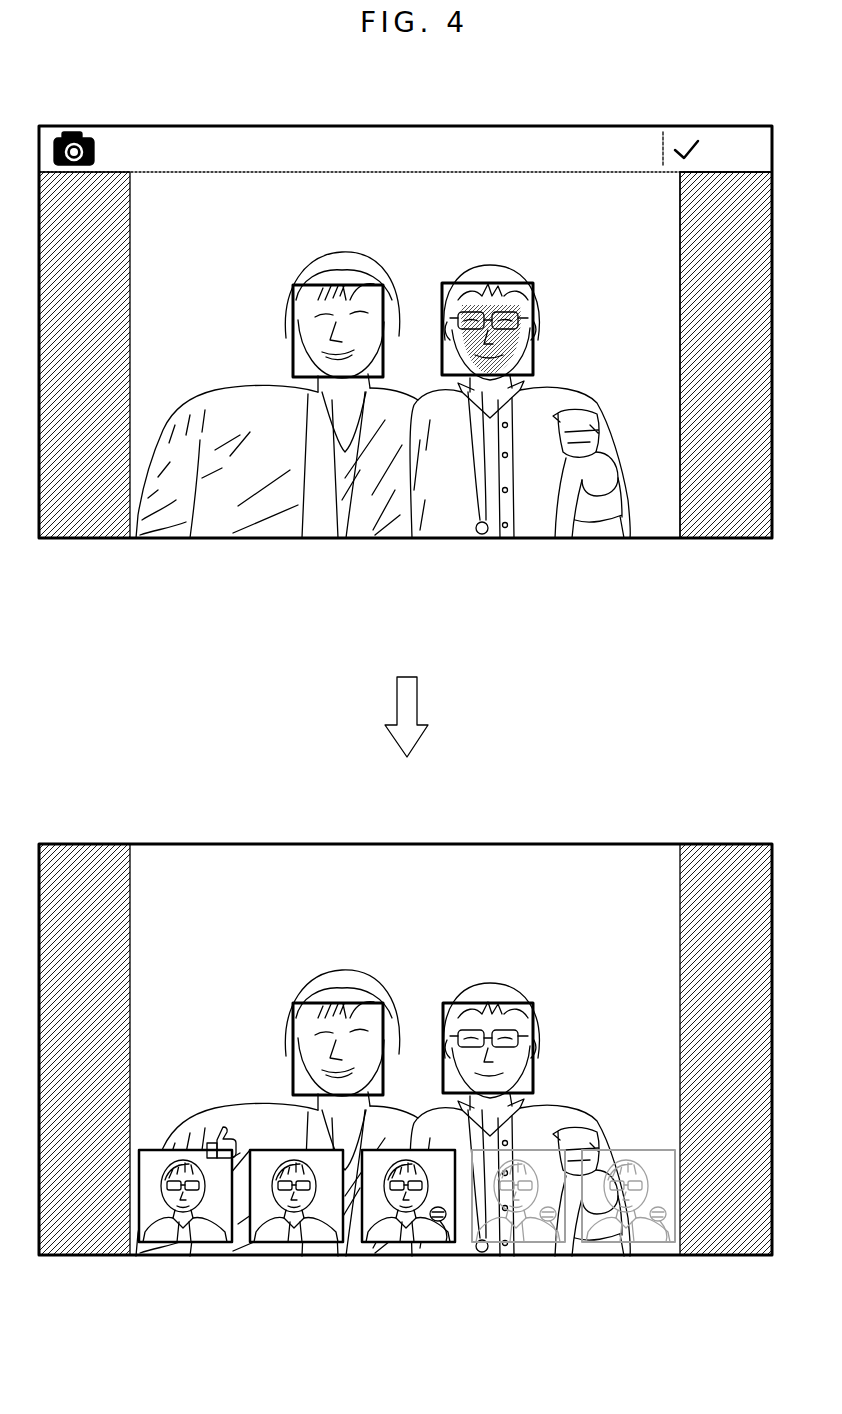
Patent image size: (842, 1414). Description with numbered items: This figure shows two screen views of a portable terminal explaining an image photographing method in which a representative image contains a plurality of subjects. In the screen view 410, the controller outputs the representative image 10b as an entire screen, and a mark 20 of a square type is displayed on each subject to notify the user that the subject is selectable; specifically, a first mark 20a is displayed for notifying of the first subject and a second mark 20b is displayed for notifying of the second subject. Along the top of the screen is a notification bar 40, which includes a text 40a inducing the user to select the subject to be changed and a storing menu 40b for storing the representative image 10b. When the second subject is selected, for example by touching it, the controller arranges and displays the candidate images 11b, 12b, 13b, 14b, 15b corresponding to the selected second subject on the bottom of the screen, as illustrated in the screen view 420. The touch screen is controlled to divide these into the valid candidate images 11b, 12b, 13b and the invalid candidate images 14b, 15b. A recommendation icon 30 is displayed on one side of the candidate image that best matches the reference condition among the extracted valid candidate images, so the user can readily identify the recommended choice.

The screen view 410 is at (492, 125).
The screen view 420 is at (562, 845).
The notification bar 40 is at (630, 67).
The text 40a is at (645, 130).
The storing menu 40b is at (731, 130).
The representative image 10b is at (687, 513).
The mark 20 is at (332, 606).
The first mark 20a is at (350, 538).
The second mark 20b is at (498, 538).
The candidate image 11b is at (152, 1244).
The candidate image 12b is at (266, 1244).
The candidate image 13b is at (378, 1244).
The candidate image 14b is at (488, 1244).
The candidate image 15b is at (598, 1244).
The recommendation icon 30 is at (222, 1158).